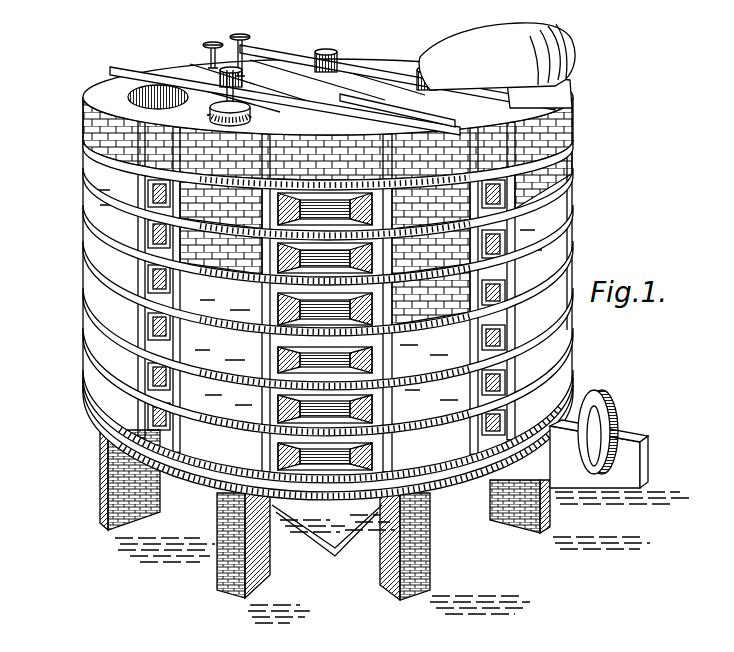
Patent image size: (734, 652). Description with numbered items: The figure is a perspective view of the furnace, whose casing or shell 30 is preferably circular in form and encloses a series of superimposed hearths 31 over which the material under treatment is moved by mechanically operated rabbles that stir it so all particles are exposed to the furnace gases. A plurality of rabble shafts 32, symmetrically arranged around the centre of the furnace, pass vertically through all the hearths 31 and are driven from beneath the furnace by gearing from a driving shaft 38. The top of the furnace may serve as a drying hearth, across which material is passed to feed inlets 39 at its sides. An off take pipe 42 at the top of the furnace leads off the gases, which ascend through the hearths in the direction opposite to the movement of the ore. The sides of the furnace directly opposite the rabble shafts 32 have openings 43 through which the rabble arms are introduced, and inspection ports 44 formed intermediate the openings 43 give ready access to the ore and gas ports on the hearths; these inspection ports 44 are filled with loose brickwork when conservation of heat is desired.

The furnace casing or shell 30 is at (328, 298).
The hearths 31 is at (252, 118).
The rabble shafts 32 is at (216, 68).
The driving shaft 38 is at (580, 420).
The feed inlets 39 is at (83, 96).
The off take pipe 42 is at (497, 65).
The openings 43 is at (326, 325).
The inspection ports 44 is at (138, 306).